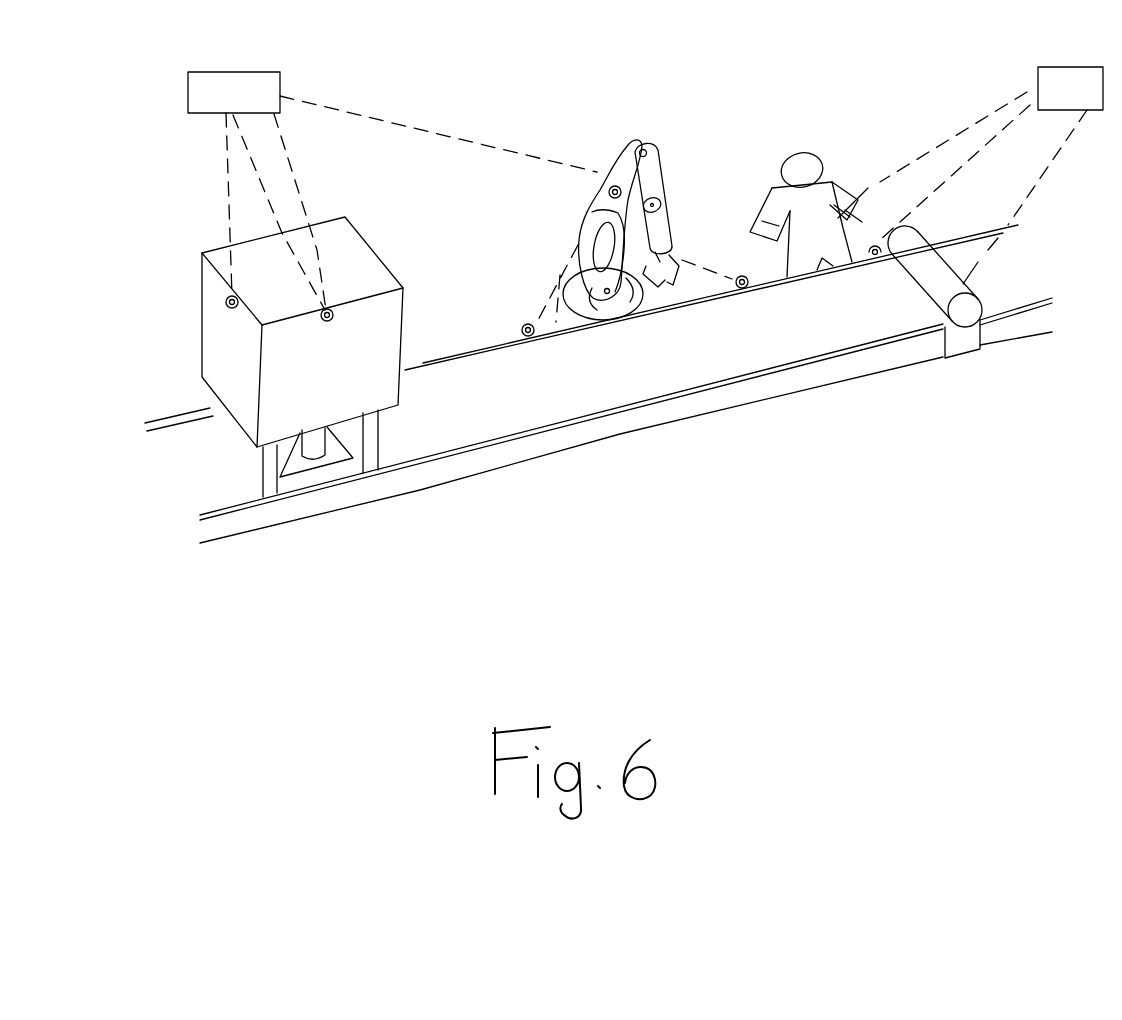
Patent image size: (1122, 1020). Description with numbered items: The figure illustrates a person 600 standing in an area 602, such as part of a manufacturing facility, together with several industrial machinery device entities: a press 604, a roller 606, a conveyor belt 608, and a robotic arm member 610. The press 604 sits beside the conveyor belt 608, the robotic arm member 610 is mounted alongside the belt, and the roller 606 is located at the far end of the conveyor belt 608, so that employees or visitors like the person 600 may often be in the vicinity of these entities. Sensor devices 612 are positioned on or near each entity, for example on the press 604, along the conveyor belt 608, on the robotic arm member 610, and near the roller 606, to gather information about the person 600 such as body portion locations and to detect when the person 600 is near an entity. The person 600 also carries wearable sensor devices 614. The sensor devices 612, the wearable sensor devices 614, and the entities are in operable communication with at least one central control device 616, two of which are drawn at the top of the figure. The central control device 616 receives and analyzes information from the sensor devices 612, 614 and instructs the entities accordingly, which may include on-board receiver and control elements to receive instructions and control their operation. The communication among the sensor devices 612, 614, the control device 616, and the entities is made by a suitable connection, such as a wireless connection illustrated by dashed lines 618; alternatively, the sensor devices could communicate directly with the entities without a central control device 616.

The person 600 is at (820, 157).
The area 602 is at (626, 437).
The press 604 is at (302, 357).
The roller 606 is at (922, 228).
The conveyor belt 608 is at (598, 372).
The robotic arm member 610 is at (667, 168).
The sensor devices 612 is at (227, 302).
The wearable sensor devices 614 is at (843, 193).
The central control device 616 is at (252, 105).
The dashed lines 618 is at (447, 133).